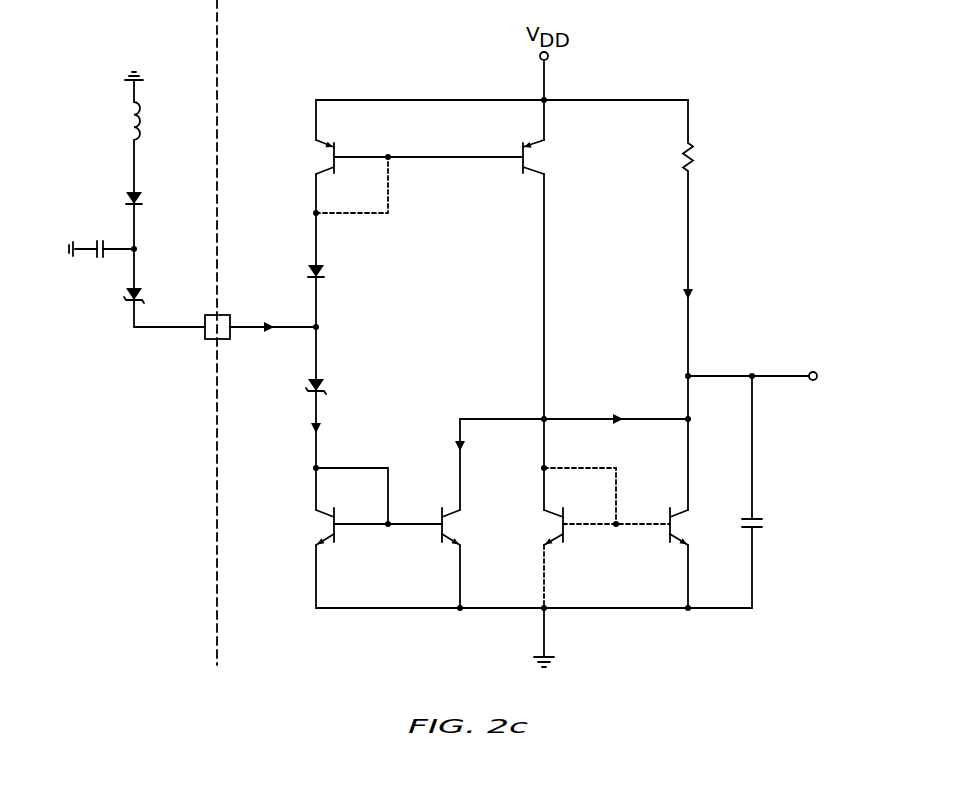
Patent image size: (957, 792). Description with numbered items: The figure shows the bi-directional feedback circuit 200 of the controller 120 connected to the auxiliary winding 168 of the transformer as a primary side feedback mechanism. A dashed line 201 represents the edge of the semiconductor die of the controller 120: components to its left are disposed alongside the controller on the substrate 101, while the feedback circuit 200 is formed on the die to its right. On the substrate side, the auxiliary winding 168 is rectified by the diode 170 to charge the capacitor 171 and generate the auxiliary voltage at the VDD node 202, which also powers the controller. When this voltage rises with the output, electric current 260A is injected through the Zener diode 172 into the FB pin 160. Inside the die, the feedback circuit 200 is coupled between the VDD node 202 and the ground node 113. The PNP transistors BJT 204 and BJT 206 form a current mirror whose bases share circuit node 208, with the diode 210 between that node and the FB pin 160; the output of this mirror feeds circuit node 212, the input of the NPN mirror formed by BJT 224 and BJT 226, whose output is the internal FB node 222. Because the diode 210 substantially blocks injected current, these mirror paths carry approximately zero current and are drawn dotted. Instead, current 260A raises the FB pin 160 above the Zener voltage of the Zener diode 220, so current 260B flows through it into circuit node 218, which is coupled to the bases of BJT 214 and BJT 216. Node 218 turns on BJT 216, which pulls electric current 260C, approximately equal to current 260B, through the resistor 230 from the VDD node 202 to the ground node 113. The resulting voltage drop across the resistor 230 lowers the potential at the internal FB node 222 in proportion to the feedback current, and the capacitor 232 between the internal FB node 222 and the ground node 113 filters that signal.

The substrate 101 is at (160, 51).
The controller 120 is at (294, 51).
The ground node 113 is at (140, 78).
The auxiliary winding 168 is at (140, 138).
The line 201 is at (219, 140).
The diode 170 is at (143, 201).
The capacitor 171 is at (100, 241).
The VDD node 202 is at (138, 249).
The Zener diode 172 is at (140, 300).
The FB pin 160 is at (222, 316).
The electric current 260A is at (270, 333).
The feedback circuit 200 is at (757, 61).
The BJT 204 is at (337, 152).
The BJT 206 is at (521, 150).
The circuit node 208 is at (314, 213).
The diode 210 is at (313, 272).
The resistor 230 is at (694, 160).
The electric current 260C is at (692, 294).
The internal FB node 222 is at (816, 373).
The capacitor 232 is at (763, 523).
The Zener diode 220 is at (313, 387).
The electric current 260B is at (320, 428).
The circuit node 218 is at (320, 467).
The BJT 214 is at (338, 539).
The BJT 216 is at (440, 518).
The circuit node 212 is at (548, 467).
The BJT 224 is at (566, 539).
The BJT 226 is at (668, 518).